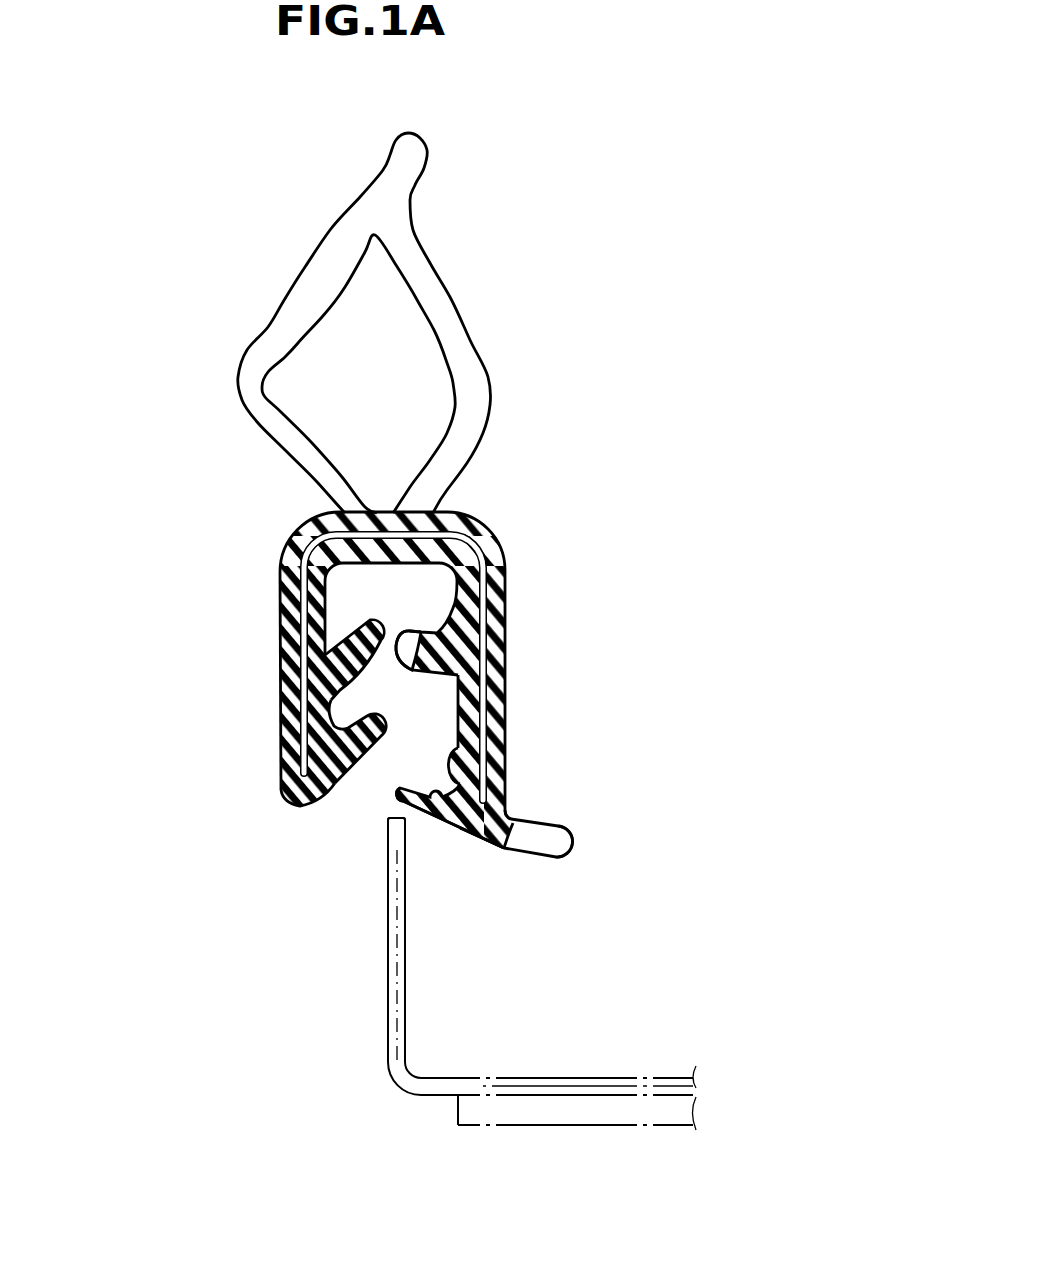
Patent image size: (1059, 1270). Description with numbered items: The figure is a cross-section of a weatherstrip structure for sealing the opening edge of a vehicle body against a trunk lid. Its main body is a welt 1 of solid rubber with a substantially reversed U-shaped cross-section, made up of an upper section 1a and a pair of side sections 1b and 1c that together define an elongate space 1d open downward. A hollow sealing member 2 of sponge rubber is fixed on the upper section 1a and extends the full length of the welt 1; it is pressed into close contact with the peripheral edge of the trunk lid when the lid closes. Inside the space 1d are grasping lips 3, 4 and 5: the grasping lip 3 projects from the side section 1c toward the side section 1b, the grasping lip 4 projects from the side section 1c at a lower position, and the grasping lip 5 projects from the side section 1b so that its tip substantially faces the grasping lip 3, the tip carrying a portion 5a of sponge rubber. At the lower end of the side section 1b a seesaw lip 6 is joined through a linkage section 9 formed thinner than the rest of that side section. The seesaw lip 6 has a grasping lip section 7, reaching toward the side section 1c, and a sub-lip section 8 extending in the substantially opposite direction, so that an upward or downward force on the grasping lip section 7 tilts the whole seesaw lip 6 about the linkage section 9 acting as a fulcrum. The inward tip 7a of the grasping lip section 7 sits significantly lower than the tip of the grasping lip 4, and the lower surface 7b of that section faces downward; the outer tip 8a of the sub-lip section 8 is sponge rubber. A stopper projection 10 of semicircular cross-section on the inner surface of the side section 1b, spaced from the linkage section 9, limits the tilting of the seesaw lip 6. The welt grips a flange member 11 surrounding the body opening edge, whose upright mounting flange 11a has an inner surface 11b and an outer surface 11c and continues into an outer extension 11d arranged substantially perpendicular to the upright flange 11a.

The welt 1 is at (508, 633).
The upper section 1a is at (453, 517).
The side section 1b is at (499, 672).
The side section 1c is at (281, 640).
The elongate space 1d is at (437, 577).
The hollow sealing member 2 is at (484, 378).
The grasping lip 3 is at (362, 624).
The grasping lip 4 is at (360, 716).
The grasping lip 5 is at (499, 578).
The portion 5a is at (403, 632).
The seesaw lip 6 is at (517, 810).
The grasping lip section 7 is at (421, 812).
The inward tip 7a is at (399, 788).
The lower surface of lower lip 7b is at (444, 805).
The sub-lip section 8 is at (530, 815).
The outer tip 8a is at (557, 853).
The linkage section 9 is at (480, 822).
The stopper projection 10 is at (452, 762).
The flange member 11 is at (360, 879).
The upright mounting flange 11a is at (386, 819).
The inner surface 11b is at (387, 932).
The outer surface 11c is at (405, 945).
The outer extension 11d is at (565, 1077).